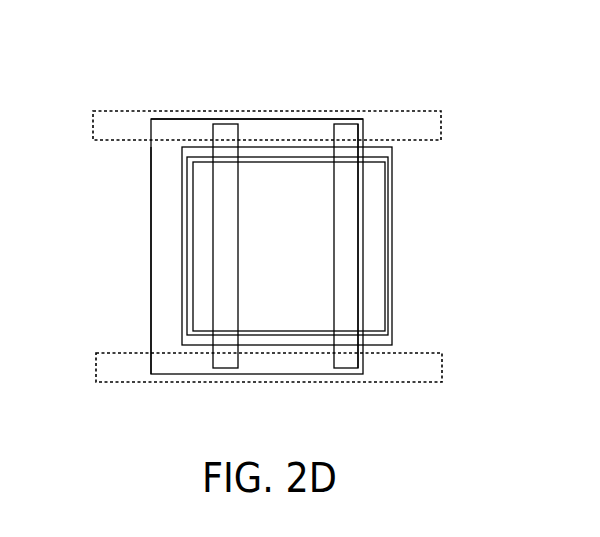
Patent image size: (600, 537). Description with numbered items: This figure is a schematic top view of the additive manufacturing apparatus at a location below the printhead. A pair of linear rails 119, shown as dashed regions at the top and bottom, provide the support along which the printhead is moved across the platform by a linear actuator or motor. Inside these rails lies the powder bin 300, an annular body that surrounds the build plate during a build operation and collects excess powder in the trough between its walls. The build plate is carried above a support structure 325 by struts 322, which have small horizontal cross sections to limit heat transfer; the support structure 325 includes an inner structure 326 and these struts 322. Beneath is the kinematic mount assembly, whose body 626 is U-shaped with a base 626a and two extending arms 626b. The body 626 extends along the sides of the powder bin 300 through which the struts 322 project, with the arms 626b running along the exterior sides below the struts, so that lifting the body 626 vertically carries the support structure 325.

The linear rails 119 is at (397, 110).
The powder bin 300 is at (392, 287).
The struts 322 is at (348, 144).
The support structure 325 is at (358, 247).
The inner structure 326 is at (352, 270).
The body 626 is at (151, 265).
The base 626a is at (165, 317).
The arms 626b is at (290, 130).